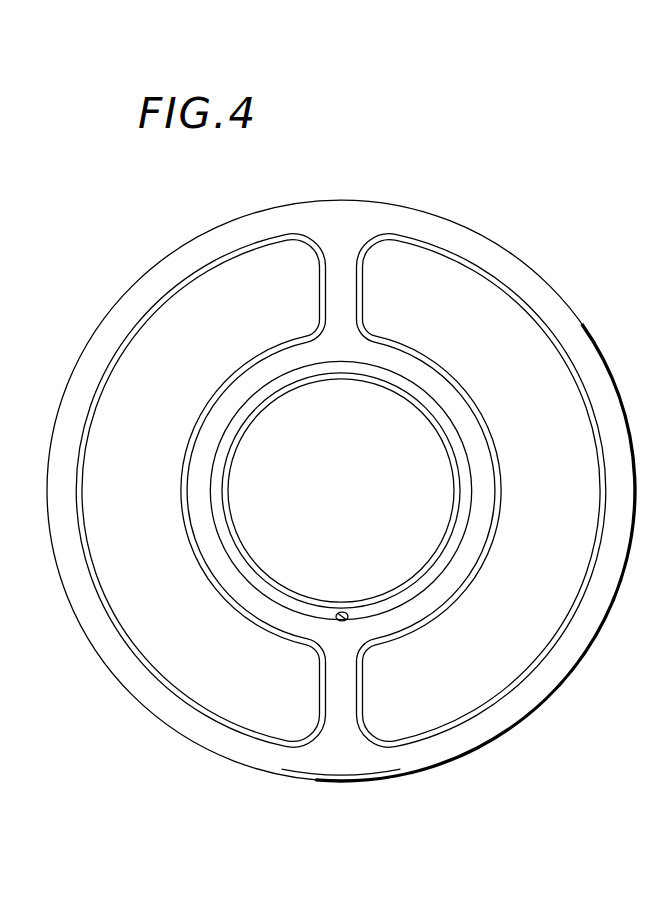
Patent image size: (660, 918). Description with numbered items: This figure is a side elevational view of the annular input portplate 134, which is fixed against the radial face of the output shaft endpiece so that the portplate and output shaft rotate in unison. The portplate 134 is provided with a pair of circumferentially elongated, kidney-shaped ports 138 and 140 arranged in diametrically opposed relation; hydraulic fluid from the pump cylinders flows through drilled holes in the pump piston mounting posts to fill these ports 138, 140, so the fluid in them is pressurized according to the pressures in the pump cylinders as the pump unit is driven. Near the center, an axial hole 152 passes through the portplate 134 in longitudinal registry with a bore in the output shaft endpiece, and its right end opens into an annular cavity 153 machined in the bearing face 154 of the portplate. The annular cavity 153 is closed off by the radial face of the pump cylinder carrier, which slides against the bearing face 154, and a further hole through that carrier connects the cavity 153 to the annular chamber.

The input portplate 134 is at (509, 252).
The kidney-shaped port 138 is at (497, 453).
The kidney-shaped port 140 is at (251, 622).
The axial hole 152 is at (348, 616).
The annular cavity 153 is at (450, 560).
The bearing face 154 is at (326, 752).